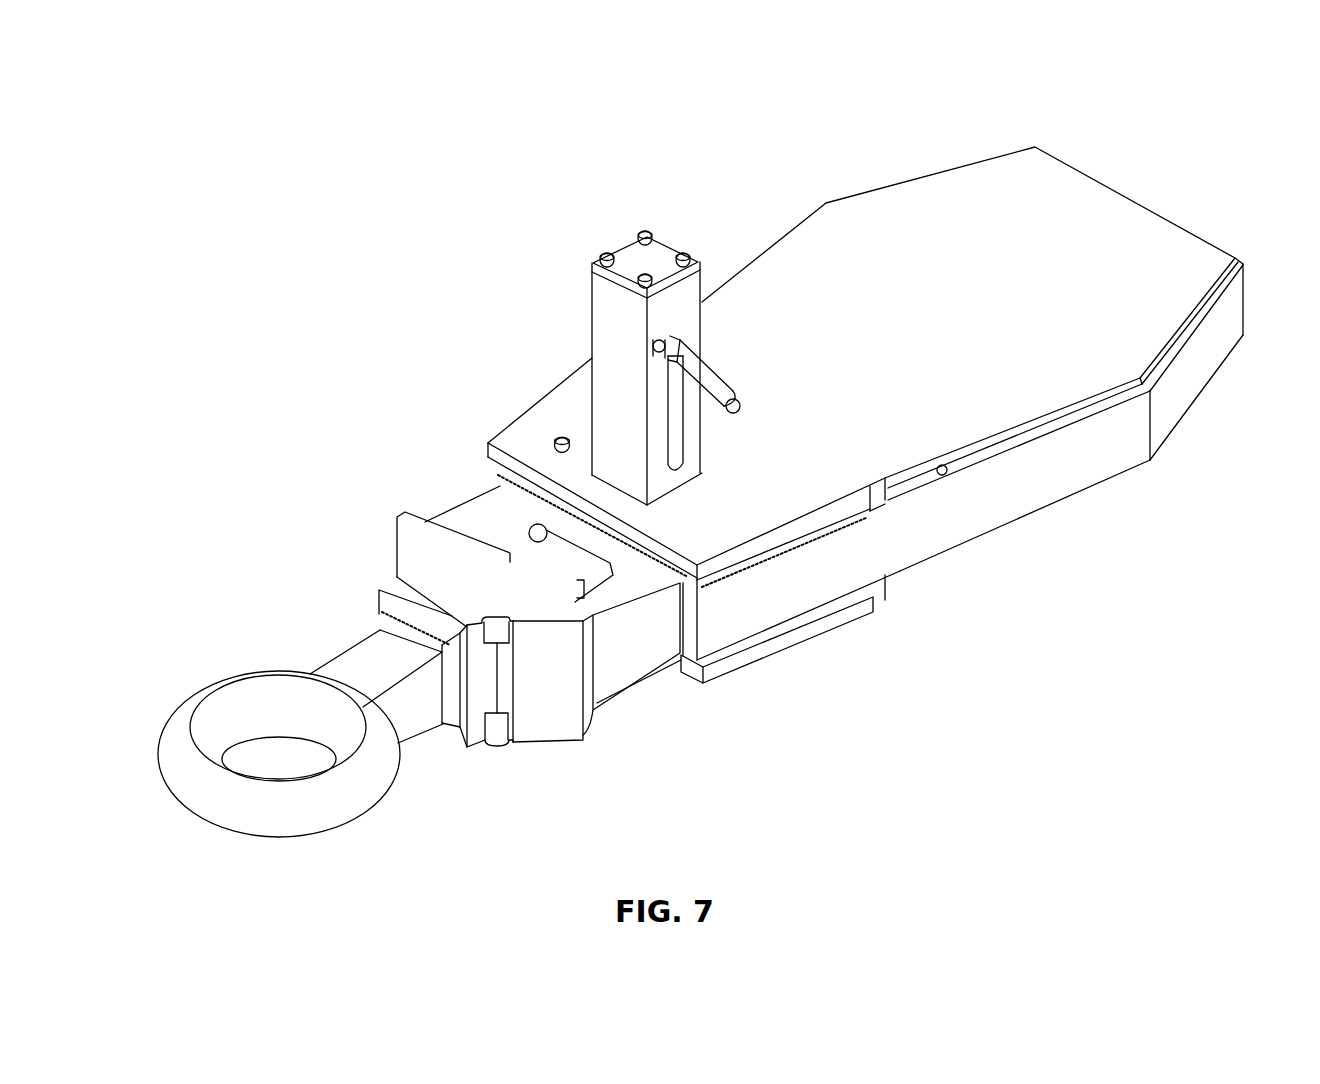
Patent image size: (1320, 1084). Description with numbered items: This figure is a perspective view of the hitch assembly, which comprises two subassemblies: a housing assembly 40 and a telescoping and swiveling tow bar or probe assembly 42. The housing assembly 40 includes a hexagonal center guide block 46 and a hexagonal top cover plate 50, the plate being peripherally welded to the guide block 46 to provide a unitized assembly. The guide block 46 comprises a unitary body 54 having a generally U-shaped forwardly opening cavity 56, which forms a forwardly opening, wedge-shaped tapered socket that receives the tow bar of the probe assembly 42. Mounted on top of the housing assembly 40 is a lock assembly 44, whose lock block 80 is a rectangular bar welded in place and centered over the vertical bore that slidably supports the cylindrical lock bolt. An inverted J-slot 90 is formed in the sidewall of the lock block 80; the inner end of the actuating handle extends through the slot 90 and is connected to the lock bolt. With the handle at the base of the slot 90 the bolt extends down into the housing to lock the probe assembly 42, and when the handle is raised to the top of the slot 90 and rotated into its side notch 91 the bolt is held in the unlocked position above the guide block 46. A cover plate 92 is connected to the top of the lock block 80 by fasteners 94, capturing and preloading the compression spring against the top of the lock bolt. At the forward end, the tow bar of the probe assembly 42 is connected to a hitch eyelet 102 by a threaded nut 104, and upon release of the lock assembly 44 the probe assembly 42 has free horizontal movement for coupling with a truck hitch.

The housing assembly 40 is at (865, 327).
The probe assembly 42 is at (337, 647).
The lock assembly 44 is at (581, 288).
The hexagonal center guide block 46 is at (1107, 460).
The hexagonal top cover plate 50 is at (556, 439).
The unitary body 54 is at (833, 521).
The U-shaped forwardly opening cavity 56 is at (793, 642).
The lock block 80 is at (702, 332).
The inverted J-slot 90 is at (681, 440).
The side notch 91 is at (652, 346).
The cover plate 92 is at (659, 254).
The fasteners 94 is at (640, 232).
The hitch eyelet 102 is at (370, 807).
The threaded nut 104 is at (597, 617).